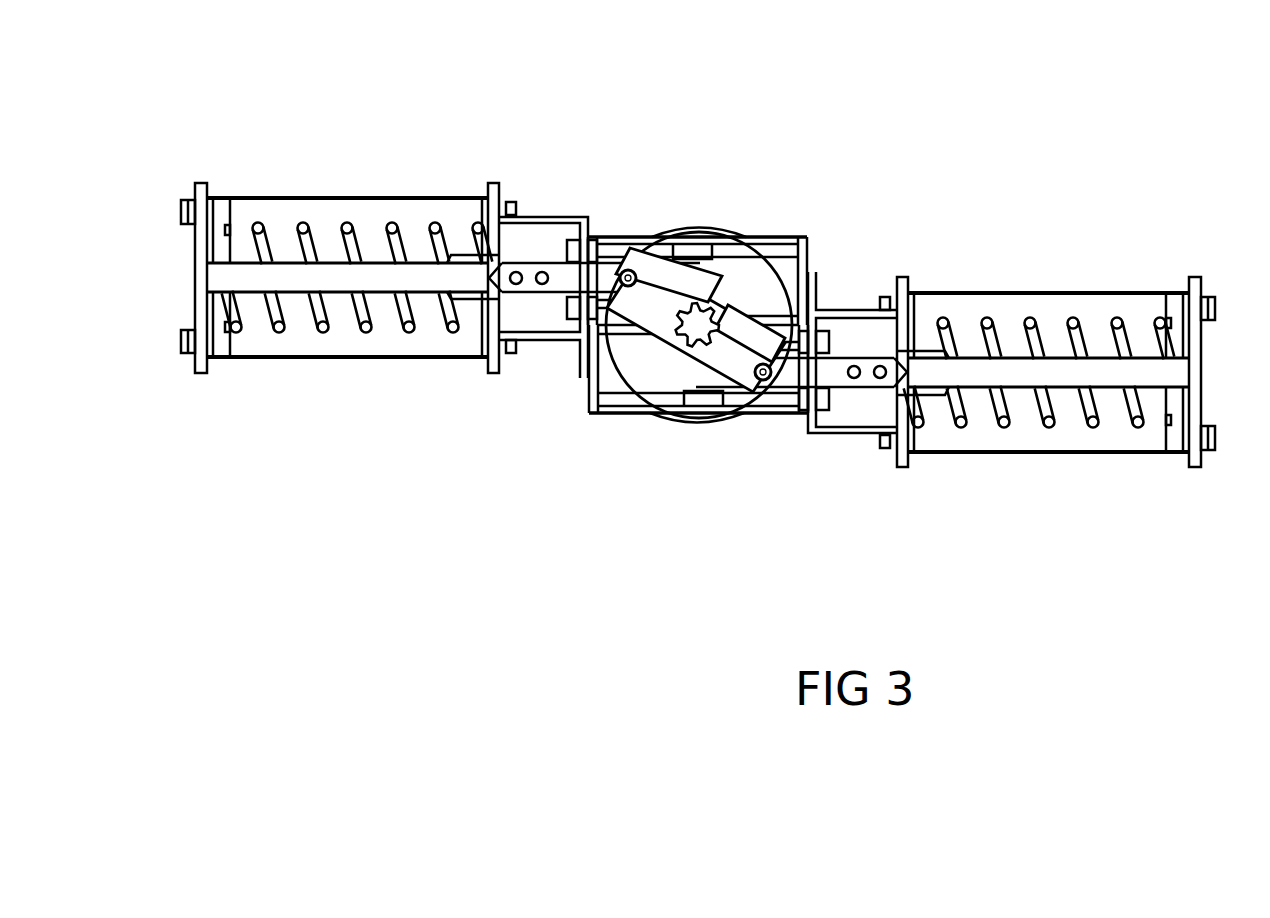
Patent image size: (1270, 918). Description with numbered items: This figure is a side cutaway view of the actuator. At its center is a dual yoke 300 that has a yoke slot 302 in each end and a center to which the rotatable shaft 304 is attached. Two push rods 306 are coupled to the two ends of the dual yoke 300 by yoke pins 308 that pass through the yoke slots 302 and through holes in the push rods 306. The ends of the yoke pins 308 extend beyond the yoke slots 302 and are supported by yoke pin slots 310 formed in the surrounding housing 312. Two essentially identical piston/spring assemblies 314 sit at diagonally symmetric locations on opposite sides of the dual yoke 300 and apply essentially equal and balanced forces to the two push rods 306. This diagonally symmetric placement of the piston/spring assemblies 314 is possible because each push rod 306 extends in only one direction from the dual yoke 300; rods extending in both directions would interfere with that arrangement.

The dual yoke 300 is at (699, 357).
The yoke slot 302 is at (742, 382).
The rotatable shaft 304 is at (697, 325).
The push rod 306 is at (560, 277).
The yoke pin 308 is at (625, 268).
The yoke pin slot 310 is at (792, 280).
The housing 312 is at (713, 230).
The piston/spring assembly 314 is at (334, 198).